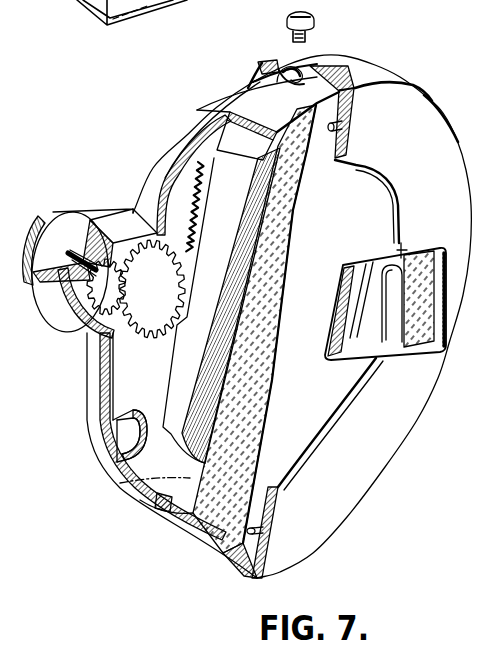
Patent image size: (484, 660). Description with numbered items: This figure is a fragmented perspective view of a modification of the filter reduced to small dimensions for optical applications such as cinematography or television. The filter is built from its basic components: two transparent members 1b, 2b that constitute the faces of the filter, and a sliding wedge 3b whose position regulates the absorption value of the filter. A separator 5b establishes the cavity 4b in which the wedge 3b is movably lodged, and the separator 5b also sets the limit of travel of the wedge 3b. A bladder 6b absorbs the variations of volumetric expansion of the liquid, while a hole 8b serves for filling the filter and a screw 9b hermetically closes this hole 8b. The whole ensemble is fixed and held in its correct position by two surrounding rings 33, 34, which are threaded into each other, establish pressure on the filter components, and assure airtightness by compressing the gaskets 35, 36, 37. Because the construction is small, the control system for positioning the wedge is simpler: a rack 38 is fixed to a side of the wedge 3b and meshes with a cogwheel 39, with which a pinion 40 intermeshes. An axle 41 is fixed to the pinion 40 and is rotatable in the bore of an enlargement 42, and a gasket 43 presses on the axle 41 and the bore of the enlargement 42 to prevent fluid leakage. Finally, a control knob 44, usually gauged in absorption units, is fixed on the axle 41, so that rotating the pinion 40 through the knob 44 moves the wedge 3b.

The transparent member 1b is at (340, 382).
The transparent member 2b is at (232, 100).
The sliding wedge 3b is at (342, 279).
The cavity 4b is at (140, 493).
The separator 5b is at (266, 92).
The bladder 6b is at (379, 312).
The hole 8b is at (262, 76).
The screw 9b is at (287, 20).
The surrounding ring 33 is at (425, 127).
The surrounding ring 34 is at (313, 55).
The gasket 35 is at (348, 126).
The gasket 36 is at (347, 88).
The gasket 37 is at (117, 430).
The rack 38 is at (200, 205).
The cogwheel 39 is at (149, 338).
The pinion 40 is at (102, 290).
The axle 41 is at (57, 291).
The enlargement 42 is at (62, 312).
The gasket 43 is at (78, 260).
The control knob 44 is at (57, 213).